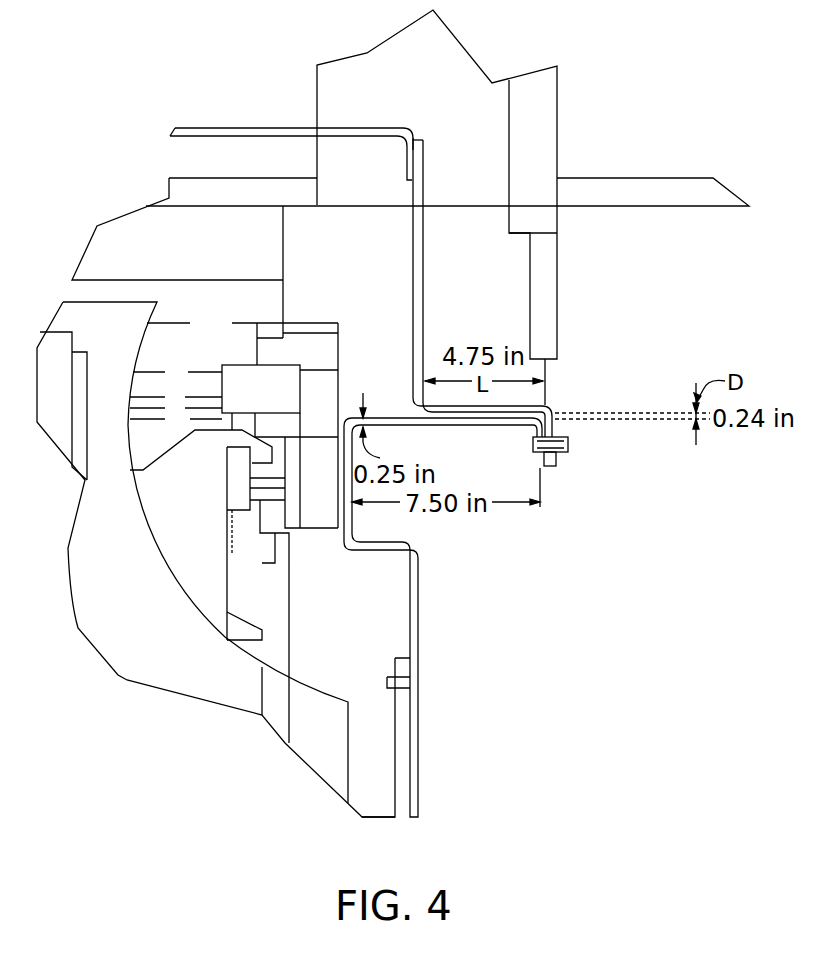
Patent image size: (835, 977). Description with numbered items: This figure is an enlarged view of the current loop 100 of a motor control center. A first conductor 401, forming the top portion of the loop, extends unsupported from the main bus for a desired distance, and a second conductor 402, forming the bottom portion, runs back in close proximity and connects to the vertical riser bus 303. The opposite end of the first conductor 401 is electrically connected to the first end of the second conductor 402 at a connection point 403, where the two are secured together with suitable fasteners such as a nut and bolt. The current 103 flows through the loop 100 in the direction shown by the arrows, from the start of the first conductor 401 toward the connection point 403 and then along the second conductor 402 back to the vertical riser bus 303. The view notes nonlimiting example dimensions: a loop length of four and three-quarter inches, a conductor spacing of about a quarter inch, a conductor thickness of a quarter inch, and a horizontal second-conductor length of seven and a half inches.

The current loop 100 is at (527, 547).
The current (I) 103 is at (394, 305).
The vertical riser bus 303 is at (418, 640).
The first conductor 401 is at (518, 407).
The second conductor 402 is at (478, 427).
The connection point 403 is at (562, 437).